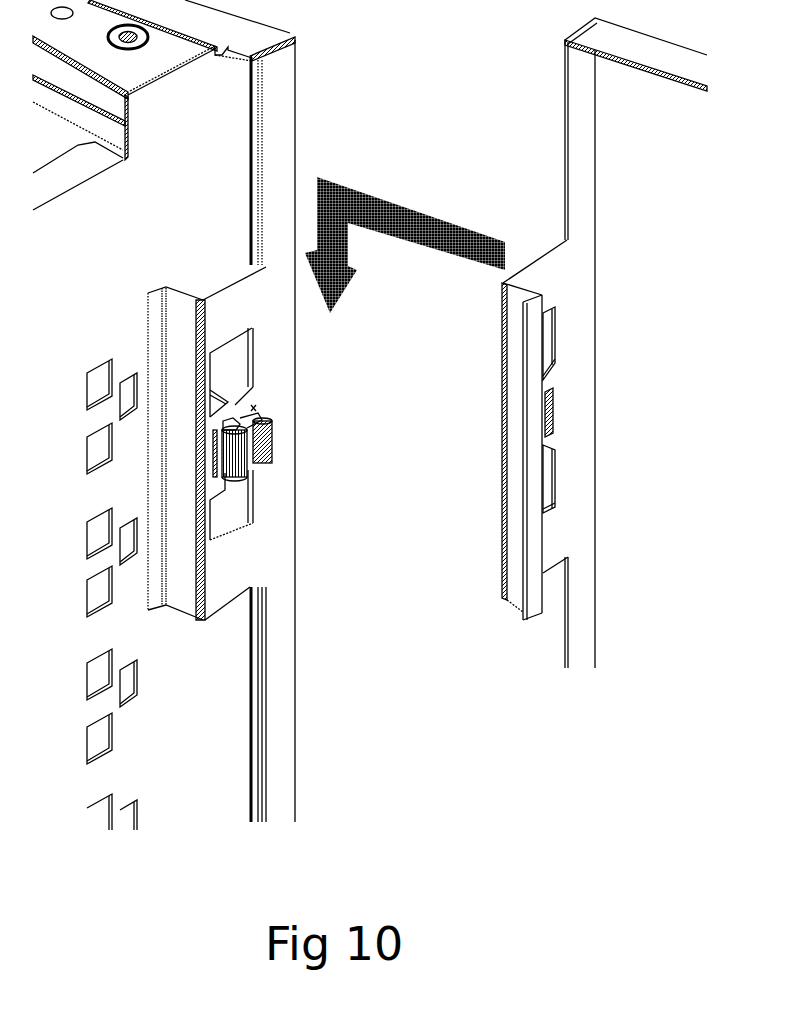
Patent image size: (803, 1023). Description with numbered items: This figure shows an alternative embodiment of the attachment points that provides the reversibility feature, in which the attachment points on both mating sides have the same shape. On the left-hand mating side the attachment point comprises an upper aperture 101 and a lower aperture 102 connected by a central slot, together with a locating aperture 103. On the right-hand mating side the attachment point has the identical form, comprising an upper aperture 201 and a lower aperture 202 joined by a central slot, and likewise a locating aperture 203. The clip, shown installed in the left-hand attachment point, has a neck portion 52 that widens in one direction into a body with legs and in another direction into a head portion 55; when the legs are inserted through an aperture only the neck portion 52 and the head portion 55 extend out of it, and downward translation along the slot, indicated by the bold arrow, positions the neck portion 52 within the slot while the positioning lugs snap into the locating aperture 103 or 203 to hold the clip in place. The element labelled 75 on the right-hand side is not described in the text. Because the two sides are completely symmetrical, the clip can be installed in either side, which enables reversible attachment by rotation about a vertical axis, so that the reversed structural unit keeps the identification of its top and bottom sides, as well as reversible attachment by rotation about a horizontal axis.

The upper slot 101 is at (227, 358).
The lower slot 102 is at (228, 523).
The pin 103 is at (255, 407).
The cylindrical latch member 52 is at (235, 418).
The knob 55 is at (263, 417).
The hook plate 75 is at (520, 283).
The upper opening 201 is at (545, 347).
The lower opening 202 is at (550, 483).
The slot 203 is at (548, 408).